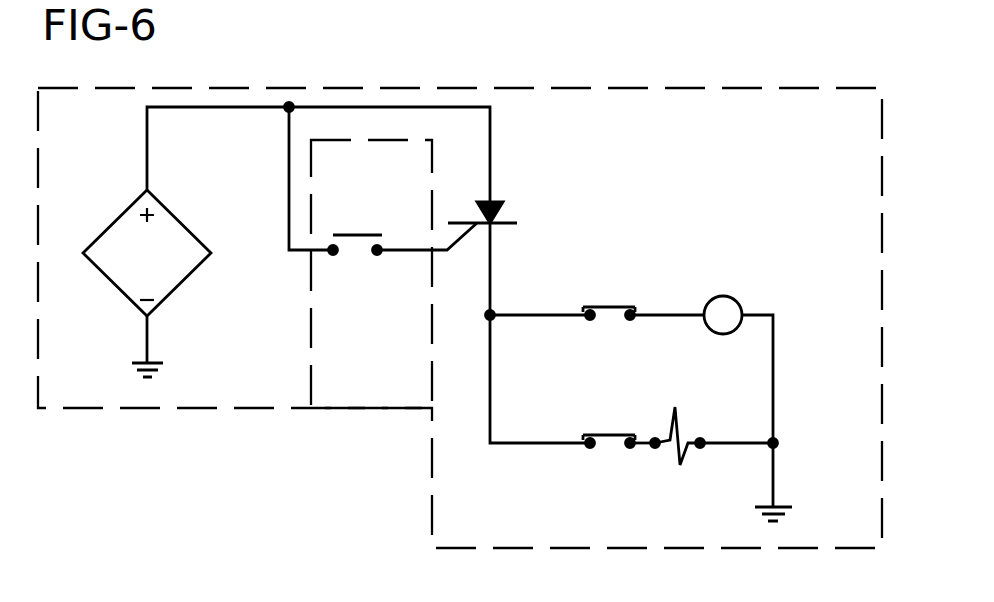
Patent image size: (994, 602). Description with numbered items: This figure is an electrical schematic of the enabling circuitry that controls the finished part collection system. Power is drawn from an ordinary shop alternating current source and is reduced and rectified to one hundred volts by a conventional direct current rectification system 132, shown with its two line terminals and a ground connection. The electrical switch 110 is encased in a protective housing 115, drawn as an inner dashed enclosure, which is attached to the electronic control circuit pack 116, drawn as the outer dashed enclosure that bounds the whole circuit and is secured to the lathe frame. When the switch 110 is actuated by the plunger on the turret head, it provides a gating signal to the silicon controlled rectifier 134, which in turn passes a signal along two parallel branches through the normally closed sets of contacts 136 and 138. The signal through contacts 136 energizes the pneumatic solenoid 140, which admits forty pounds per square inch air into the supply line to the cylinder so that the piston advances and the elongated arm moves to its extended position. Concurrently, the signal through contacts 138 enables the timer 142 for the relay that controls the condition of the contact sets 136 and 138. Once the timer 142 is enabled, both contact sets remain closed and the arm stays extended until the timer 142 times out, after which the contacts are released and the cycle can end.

The electronic control circuit pack 116 is at (524, 84).
The protective housing 115 is at (378, 414).
The direct current rectification system 132 is at (192, 294).
The electrical switch 110 is at (358, 235).
The silicon controlled rectifier 134 is at (500, 209).
The normally closed contacts 138 is at (614, 298).
The timer 142 is at (738, 300).
The normally closed contacts 136 is at (616, 418).
The pneumatic solenoid 140 is at (671, 472).